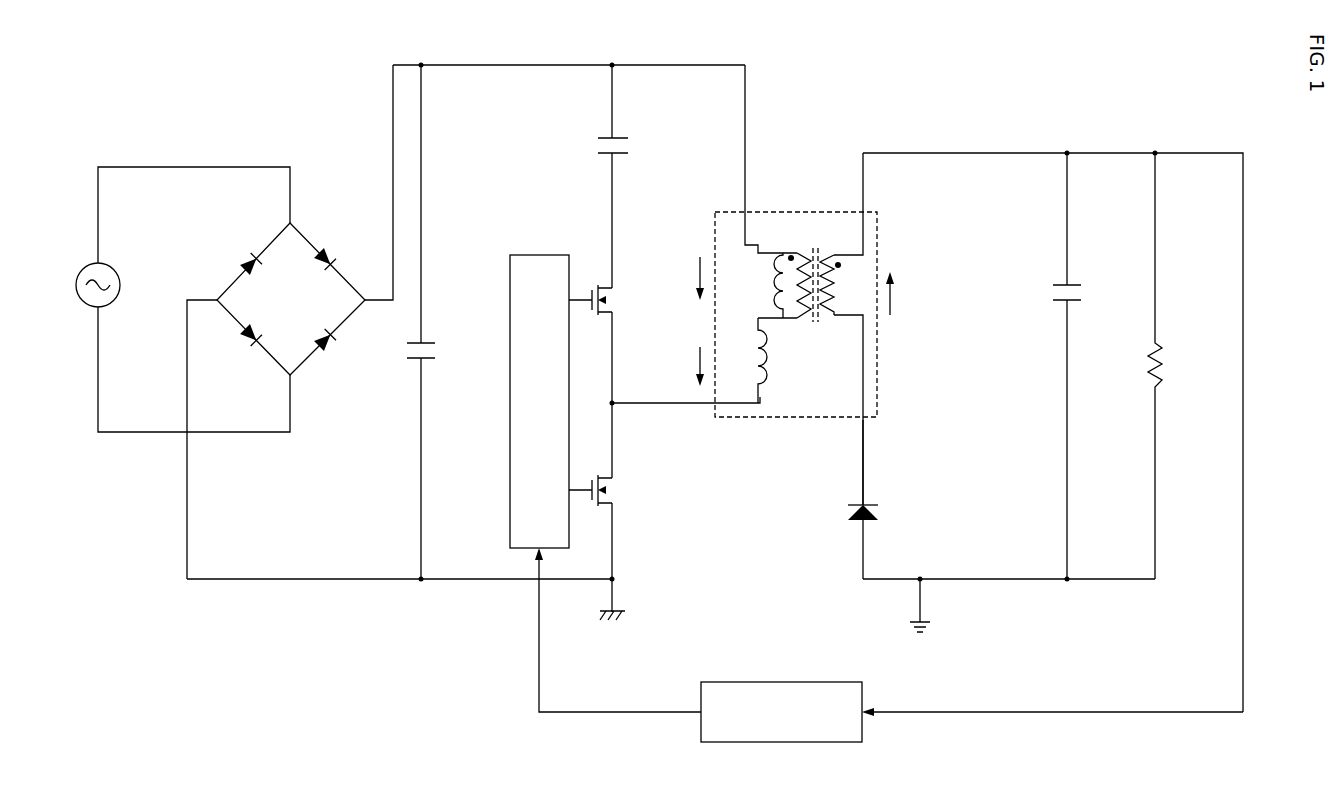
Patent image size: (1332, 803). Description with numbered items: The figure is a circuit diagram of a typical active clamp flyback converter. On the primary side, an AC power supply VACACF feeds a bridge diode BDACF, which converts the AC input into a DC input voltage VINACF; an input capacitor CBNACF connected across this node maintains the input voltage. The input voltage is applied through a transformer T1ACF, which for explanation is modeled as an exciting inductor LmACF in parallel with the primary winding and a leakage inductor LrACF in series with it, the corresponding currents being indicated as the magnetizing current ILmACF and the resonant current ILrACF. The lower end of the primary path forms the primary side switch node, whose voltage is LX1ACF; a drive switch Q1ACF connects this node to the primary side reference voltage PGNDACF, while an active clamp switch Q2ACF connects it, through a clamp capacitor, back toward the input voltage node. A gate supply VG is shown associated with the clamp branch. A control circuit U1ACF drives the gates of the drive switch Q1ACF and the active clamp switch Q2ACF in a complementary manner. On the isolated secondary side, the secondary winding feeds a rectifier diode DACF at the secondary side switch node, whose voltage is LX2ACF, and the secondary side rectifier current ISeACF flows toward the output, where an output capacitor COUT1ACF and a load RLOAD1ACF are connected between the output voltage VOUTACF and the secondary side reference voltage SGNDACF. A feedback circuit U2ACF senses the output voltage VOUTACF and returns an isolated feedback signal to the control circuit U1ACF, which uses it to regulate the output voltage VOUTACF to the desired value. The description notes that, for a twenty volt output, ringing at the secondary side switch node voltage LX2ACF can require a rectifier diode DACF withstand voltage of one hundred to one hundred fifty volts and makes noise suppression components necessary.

The AC power supply VACACF is at (183, 299).
The bridge diode BDACF is at (290, 322).
The input voltage VINACF is at (569, 58).
The input bulk capacitor CBNACF is at (447, 323).
The gate drive voltage source VG is at (615, 176).
The control circuit U1ACF is at (539, 392).
The active clamp switch Q2ACF is at (610, 344).
The drive switch Q1ACF is at (611, 507).
The primary side switch node voltage LX1ACF is at (685, 395).
The primary side reference voltage PGNDACF is at (614, 627).
The transformer T1ACF is at (796, 285).
The exciting inductor LmACF is at (758, 285).
The leakage inductor LrACF is at (750, 360).
The magnetizing current ILmACF is at (689, 279).
The resonant current ILrACF is at (689, 364).
The secondary side rectifier current ISeACF is at (897, 295).
The output voltage VOUTACF is at (1053, 424).
The output capacitor COUT1ACF is at (1097, 367).
The load RLOAD1ACF is at (1190, 366).
The rectifier diode DACF is at (877, 542).
The secondary side switch node voltage LX2ACF is at (887, 462).
The secondary side reference voltage SGNDACF is at (926, 616).
The feedback circuit U2ACF is at (889, 645).